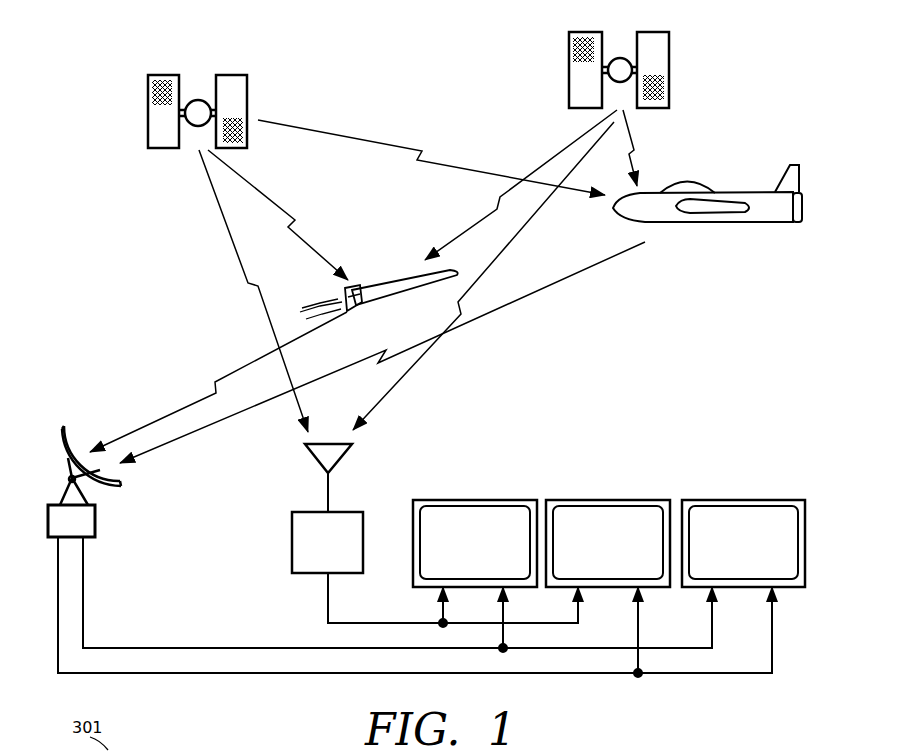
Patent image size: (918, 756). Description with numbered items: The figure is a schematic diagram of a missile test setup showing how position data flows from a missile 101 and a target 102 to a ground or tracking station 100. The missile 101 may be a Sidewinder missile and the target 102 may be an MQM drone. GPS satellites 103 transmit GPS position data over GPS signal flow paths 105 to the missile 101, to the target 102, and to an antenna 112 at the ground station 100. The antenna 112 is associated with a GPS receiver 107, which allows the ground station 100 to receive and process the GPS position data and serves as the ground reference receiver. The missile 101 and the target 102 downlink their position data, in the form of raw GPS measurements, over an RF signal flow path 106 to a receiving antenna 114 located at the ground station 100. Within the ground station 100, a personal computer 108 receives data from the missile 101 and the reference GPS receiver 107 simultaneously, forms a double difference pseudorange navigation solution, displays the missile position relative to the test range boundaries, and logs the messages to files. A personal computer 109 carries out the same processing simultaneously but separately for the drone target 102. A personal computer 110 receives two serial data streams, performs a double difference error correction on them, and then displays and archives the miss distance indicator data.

The ground station 100 is at (684, 432).
The missile 101 is at (392, 283).
The target 102 is at (775, 212).
The GPS satellites 103 is at (198, 100).
The GPS signal flow paths 105 is at (388, 143).
The RF signal flow path 106 is at (585, 273).
The GPS receiver 107 is at (292, 522).
The personal computer 108 is at (506, 510).
The personal computer 109 is at (640, 510).
The personal computer 110 is at (774, 512).
The antenna 112 is at (320, 467).
The receiving antenna 114 is at (68, 432).